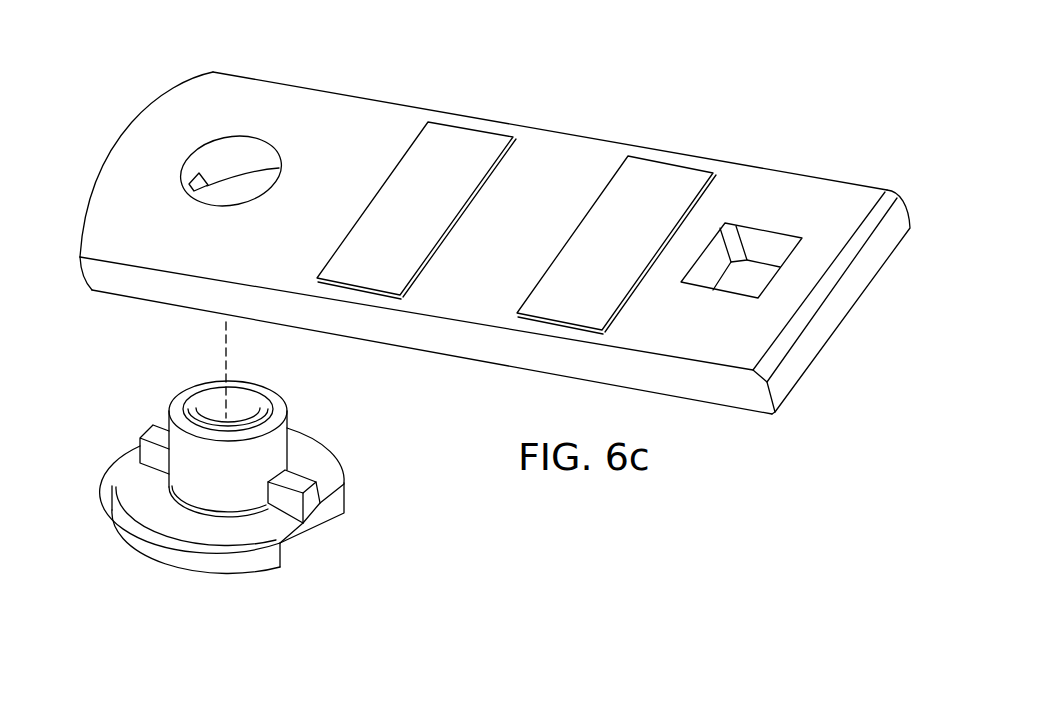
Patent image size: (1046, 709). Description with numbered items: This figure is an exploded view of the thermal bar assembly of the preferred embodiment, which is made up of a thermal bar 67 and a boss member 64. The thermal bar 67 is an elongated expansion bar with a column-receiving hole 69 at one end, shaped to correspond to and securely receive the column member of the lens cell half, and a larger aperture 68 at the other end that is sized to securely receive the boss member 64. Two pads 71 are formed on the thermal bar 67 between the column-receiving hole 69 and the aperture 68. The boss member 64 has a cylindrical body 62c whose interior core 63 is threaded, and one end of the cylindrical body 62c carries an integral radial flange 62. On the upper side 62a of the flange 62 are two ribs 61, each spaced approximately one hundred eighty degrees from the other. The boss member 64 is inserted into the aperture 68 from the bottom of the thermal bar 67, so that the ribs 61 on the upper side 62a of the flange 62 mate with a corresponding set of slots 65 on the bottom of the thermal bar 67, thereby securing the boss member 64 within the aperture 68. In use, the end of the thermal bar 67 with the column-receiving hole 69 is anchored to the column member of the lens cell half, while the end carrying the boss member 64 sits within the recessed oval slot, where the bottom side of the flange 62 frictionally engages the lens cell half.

The rib 61 is at (302, 483).
The radial flange 62 is at (272, 528).
The upper side of the flange 62a is at (270, 532).
The cylindrical body 62c is at (203, 492).
The interior core 63 is at (247, 417).
The boss member 64 is at (150, 408).
The slots 65 is at (193, 178).
The thermal bar 67 is at (507, 247).
The aperture 68 is at (225, 150).
The column-receiving hole 69 is at (758, 245).
The pads 71 is at (450, 170).